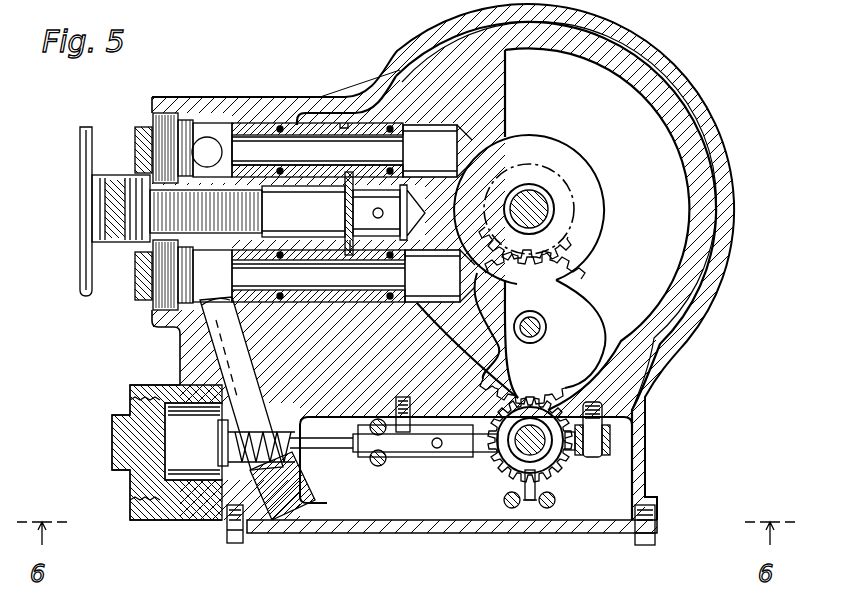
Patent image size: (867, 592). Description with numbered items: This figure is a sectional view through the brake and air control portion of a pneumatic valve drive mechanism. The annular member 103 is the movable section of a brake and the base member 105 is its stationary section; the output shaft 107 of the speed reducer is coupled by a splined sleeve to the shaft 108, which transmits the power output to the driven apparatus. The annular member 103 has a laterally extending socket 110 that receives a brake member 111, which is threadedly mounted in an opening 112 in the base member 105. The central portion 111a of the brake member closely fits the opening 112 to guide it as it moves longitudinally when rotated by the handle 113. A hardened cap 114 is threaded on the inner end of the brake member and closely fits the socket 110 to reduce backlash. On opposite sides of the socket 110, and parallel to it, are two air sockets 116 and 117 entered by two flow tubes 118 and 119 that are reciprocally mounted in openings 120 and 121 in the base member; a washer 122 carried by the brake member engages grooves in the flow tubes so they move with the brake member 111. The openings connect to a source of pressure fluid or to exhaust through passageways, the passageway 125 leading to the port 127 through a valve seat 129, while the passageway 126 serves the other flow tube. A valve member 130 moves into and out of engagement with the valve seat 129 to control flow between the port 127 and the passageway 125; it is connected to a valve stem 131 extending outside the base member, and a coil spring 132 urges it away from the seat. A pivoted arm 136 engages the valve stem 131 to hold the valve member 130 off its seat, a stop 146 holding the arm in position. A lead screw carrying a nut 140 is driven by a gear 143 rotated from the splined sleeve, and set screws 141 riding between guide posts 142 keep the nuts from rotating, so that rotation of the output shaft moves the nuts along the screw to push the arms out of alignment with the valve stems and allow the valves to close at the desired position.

The annular member 103 is at (712, 222).
The base member 105 is at (697, 87).
The output shaft 107 is at (548, 205).
The shaft 108 is at (570, 212).
The socket 110 is at (418, 182).
The brake member 111 is at (303, 188).
The central portion 111a is at (315, 219).
The opening 112 is at (250, 140).
The handle 113 is at (80, 270).
The cap 114 is at (326, 172).
The socket 116 is at (462, 135).
The socket 117 is at (427, 302).
The flow tube 118 is at (290, 125).
The flow tube 119 is at (314, 300).
The opening 120 is at (214, 125).
The opening 121 is at (180, 325).
The washer 122 is at (346, 256).
The passageway 125 is at (215, 350).
The passageway 126 is at (200, 128).
The port 127 is at (168, 492).
The valve seat 129 is at (266, 522).
The valve member 130 is at (222, 452).
The valve stem 131 is at (347, 455).
The coil spring 132 is at (235, 445).
The arm 136 is at (476, 450).
The nut 140 is at (560, 478).
The set screw 141 is at (540, 508).
The guide posts 142 is at (505, 502).
The gear 143 is at (575, 297).
The stop 146 is at (410, 457).